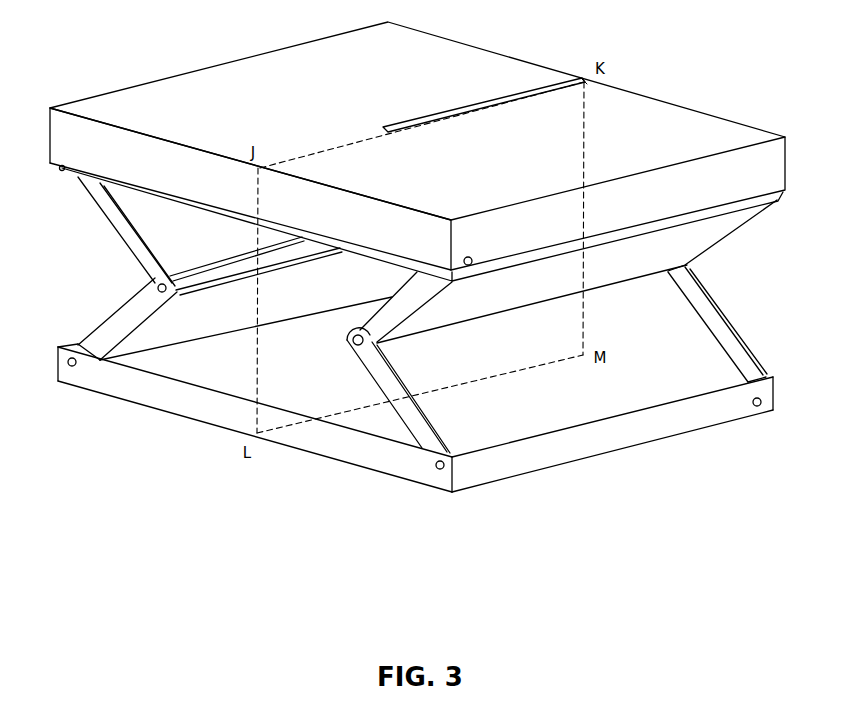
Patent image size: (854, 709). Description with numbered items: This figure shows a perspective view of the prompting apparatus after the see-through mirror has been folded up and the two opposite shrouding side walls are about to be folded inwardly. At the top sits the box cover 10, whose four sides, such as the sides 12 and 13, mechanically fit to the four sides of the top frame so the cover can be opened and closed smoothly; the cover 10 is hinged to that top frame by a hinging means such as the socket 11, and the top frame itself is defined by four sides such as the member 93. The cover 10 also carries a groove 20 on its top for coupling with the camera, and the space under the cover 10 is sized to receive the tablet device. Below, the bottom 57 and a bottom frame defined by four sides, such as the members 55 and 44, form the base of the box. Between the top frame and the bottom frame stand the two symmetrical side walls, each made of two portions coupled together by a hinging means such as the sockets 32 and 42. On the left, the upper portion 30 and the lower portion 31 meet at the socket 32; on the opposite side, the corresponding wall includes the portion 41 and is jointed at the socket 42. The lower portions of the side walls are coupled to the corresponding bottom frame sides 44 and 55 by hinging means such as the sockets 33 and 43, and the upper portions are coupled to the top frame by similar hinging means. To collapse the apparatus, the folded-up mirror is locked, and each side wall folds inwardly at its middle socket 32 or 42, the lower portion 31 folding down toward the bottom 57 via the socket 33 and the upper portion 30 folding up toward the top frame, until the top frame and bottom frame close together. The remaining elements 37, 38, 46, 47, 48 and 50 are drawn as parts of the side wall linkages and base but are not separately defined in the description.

The box cover 10 is at (660, 132).
The socket 11 is at (480, 262).
The side of box cover 12 is at (747, 170).
The side of box cover 13 is at (70, 143).
The groove 20 is at (553, 80).
The upper portion of side wall 30 is at (157, 223).
The lower portion of side wall 31 is at (165, 328).
The socket 32 is at (158, 288).
The socket 33 is at (60, 382).
The first leg 37 is at (103, 197).
The second leg 38 is at (122, 322).
The portion of opposite side wall 41 is at (660, 337).
The socket 42 is at (370, 350).
The socket 43 is at (446, 472).
The bottom frame member 44 is at (590, 445).
The fastener 46 is at (763, 410).
The upper link 47 is at (393, 312).
The lower link 48 is at (410, 425).
The rear leg 50 is at (702, 352).
The bottom frame member 55 is at (337, 443).
The bottom 57 is at (243, 373).
The top frame member 93 is at (60, 169).